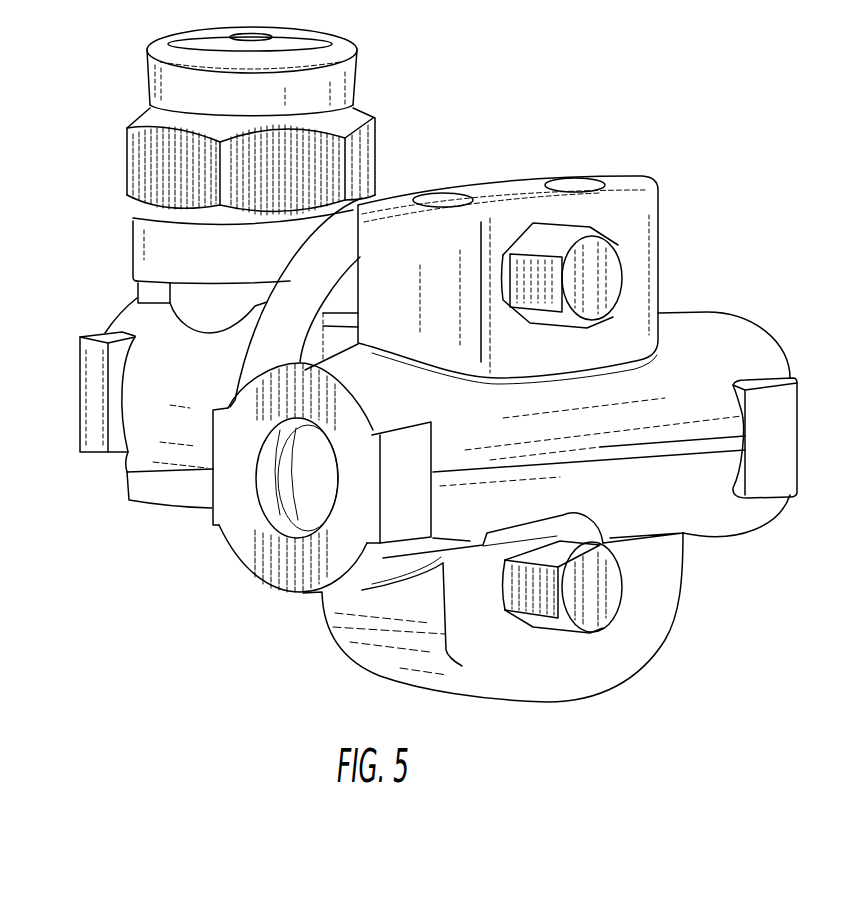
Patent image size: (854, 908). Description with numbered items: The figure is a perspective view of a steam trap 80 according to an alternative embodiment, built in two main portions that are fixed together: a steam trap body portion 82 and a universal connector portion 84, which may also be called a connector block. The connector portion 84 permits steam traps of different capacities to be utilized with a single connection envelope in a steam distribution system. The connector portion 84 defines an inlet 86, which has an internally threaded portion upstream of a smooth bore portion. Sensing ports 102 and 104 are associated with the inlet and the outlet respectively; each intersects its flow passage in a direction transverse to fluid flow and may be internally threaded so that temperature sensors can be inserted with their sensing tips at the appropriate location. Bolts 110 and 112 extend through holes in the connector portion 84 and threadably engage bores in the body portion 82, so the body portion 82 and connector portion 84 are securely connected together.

The steam trap 80 is at (539, 126).
The steam trap body portion 82 is at (144, 319).
The universal connector portion 84 is at (713, 342).
The inlet 86 is at (277, 514).
The sensing port 102 is at (444, 197).
The sensing port 104 is at (565, 182).
The bolt 110 is at (612, 272).
The bolt 112 is at (613, 615).